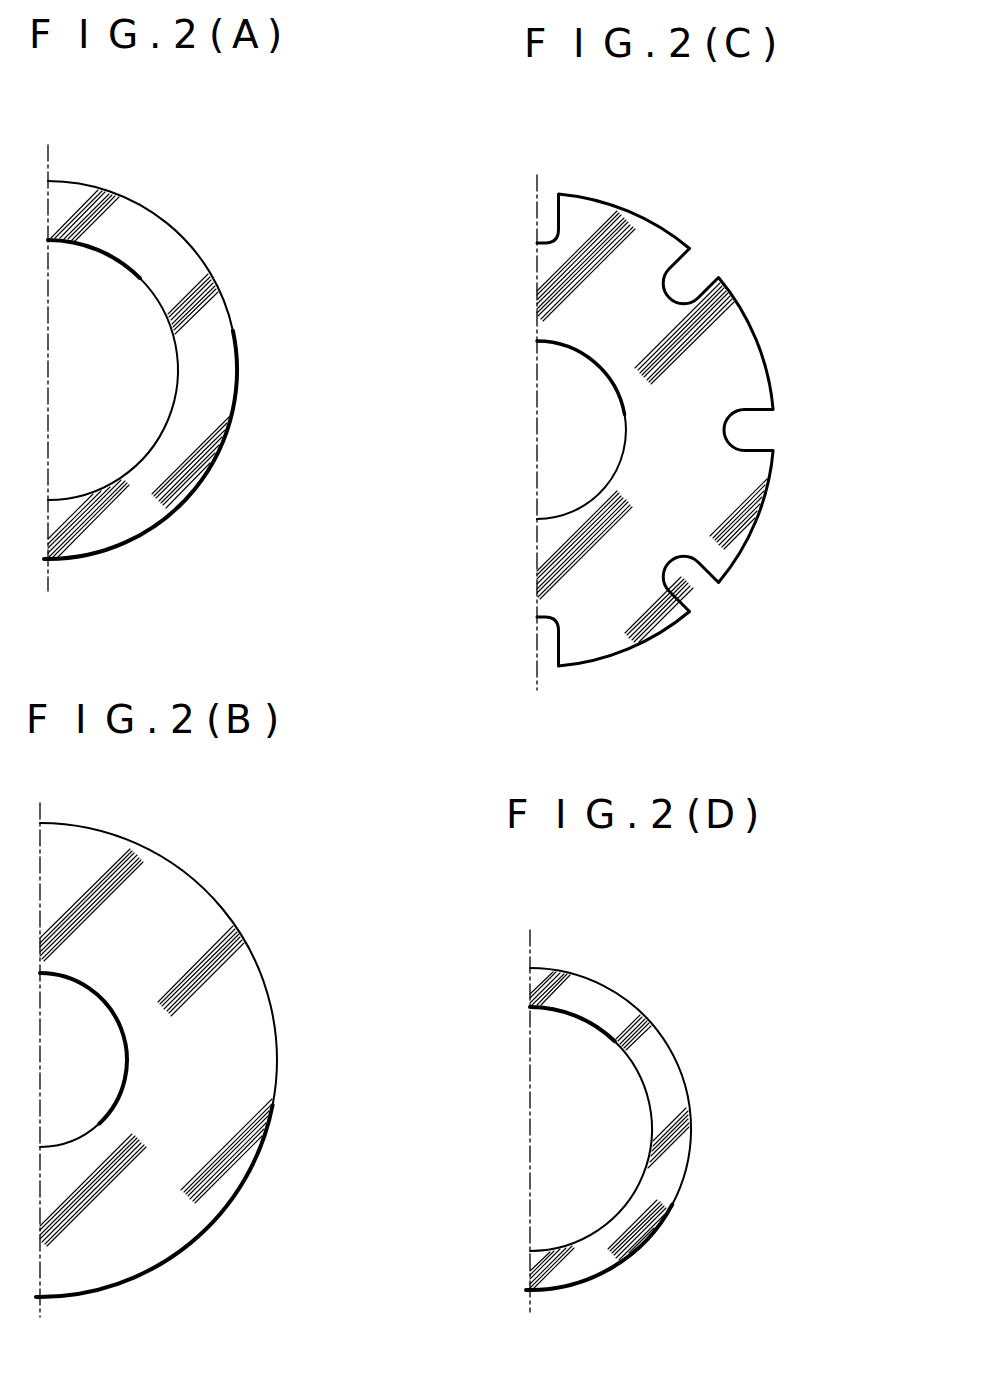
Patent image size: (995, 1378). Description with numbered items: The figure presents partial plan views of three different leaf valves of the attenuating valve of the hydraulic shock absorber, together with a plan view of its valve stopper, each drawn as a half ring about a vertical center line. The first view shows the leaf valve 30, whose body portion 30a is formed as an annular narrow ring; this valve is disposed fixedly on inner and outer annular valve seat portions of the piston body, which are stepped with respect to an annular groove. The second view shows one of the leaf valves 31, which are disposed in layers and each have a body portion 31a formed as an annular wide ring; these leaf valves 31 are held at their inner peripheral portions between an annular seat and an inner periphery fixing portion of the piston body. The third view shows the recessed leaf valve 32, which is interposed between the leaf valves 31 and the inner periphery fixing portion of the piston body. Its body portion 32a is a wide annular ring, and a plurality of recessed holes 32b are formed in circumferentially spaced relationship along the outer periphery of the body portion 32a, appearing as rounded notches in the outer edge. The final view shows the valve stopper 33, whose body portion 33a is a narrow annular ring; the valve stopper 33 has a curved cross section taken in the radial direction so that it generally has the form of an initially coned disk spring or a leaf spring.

The leaf valve 30 is at (206, 260).
The body portion 30a is at (180, 489).
The leaf valves 31 is at (208, 890).
The body portion 31a is at (185, 1223).
The recessed leaf valve 32 is at (758, 340).
The body portion 32a is at (739, 393).
The recessed holes 32b is at (552, 220).
In FIG. 2D, the valve stopper 33 is at (654, 1019).
In FIG. 2D, the body portion 33a is at (625, 1223).